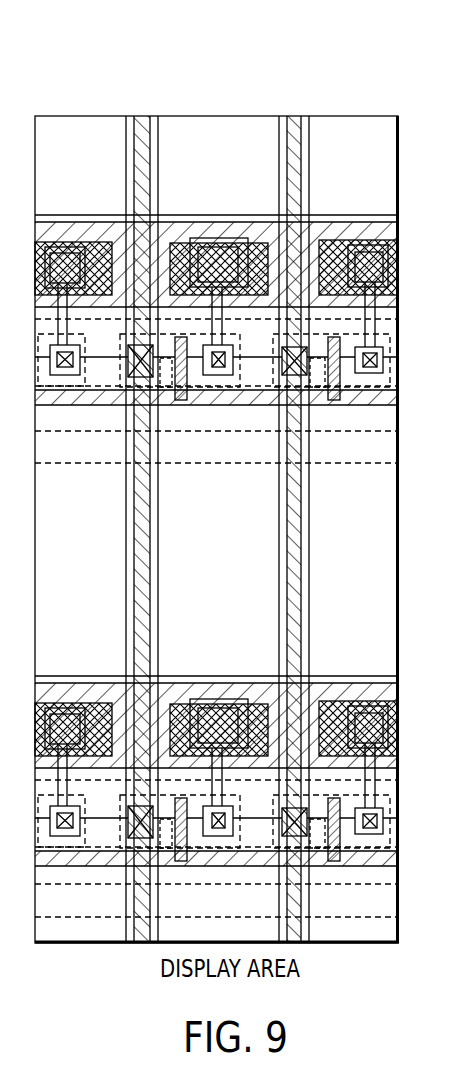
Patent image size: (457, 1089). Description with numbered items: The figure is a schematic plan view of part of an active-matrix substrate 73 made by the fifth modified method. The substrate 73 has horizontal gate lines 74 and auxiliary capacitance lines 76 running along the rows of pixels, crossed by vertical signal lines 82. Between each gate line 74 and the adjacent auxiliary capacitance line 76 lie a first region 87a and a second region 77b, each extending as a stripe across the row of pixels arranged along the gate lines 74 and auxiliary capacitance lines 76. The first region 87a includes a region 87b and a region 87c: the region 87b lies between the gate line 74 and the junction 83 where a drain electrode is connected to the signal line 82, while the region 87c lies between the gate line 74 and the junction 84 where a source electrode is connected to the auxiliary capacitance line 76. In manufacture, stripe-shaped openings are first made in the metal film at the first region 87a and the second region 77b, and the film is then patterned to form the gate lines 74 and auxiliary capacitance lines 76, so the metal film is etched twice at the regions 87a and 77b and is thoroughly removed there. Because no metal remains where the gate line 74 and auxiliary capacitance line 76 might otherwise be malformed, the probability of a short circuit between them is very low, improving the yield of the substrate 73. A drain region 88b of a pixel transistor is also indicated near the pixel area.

The active-matrix substrate 73 is at (220, 74).
The signal line 82 is at (141, 118).
The auxiliary capacitance line 76 is at (398, 233).
The first region 87a is at (395, 352).
The gate line 74 is at (395, 401).
The second region 77b is at (398, 440).
The junction of drain electrode 83 is at (130, 376).
The junction of source electrode 84 is at (232, 373).
The region 87b is at (172, 398).
The region 87c is at (200, 400).
The drain region 88b is at (442, 500).